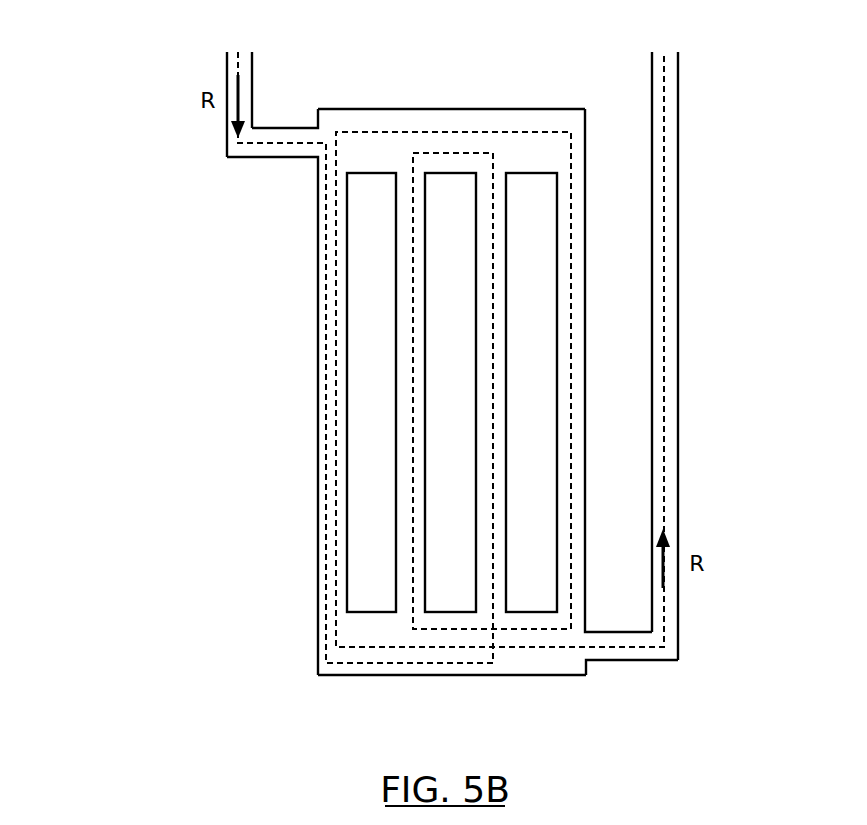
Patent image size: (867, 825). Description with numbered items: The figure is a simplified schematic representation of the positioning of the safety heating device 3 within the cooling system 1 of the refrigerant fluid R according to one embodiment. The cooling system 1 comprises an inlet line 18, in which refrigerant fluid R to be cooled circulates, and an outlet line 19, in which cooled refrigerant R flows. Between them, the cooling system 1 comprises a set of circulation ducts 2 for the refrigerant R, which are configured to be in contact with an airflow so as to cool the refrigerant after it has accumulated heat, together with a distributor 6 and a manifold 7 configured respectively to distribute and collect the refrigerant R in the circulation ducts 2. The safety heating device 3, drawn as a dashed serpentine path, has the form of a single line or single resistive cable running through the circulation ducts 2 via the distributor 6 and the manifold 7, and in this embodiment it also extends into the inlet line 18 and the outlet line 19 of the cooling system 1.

The cooling system 1 is at (98, 181).
The circulation ducts 2 is at (315, 399).
The safety heating device 3 is at (330, 309).
The distributor 6 is at (502, 109).
The manifold 7 is at (502, 675).
The inlet line 18 is at (223, 67).
The outlet line 19 is at (677, 158).